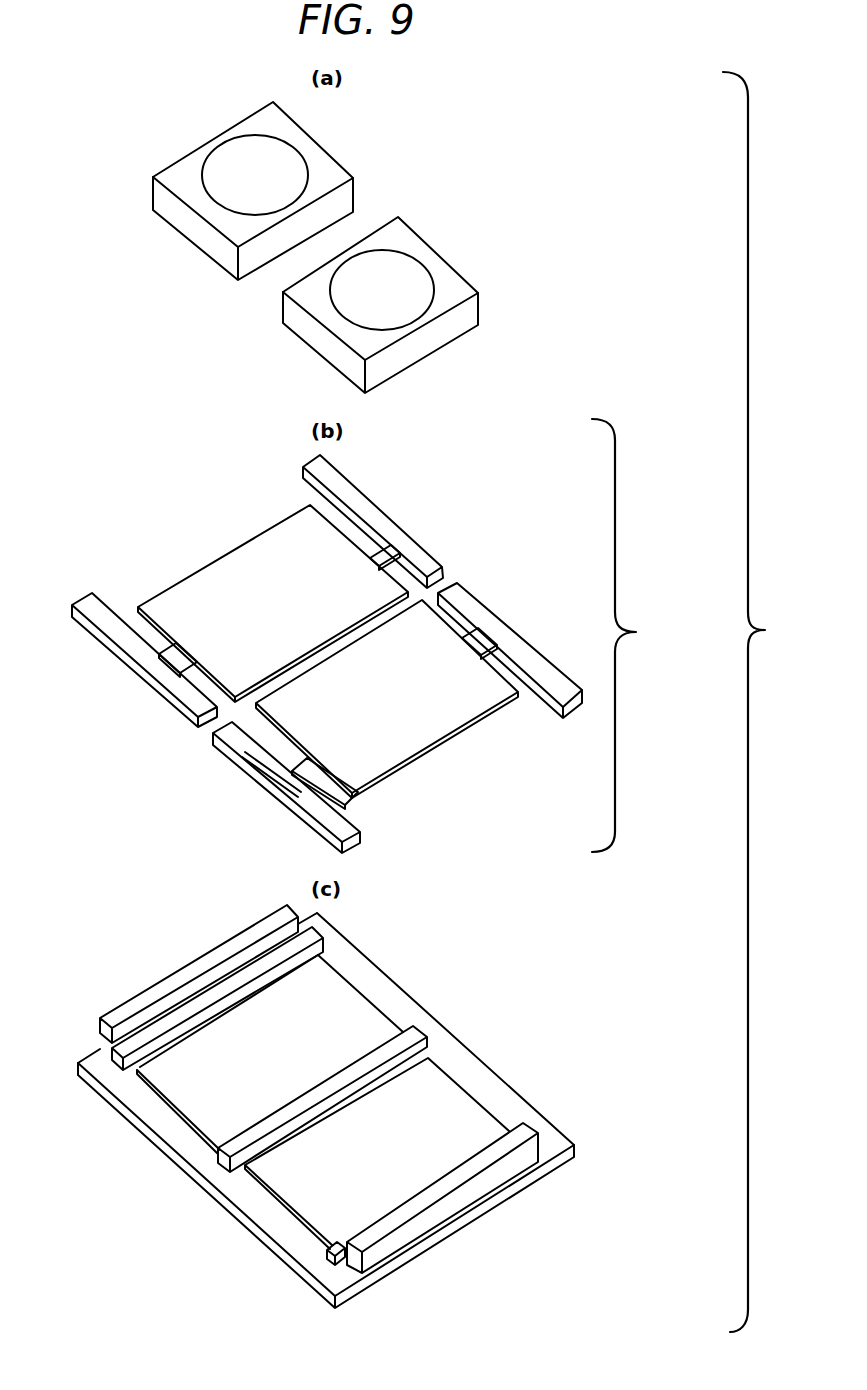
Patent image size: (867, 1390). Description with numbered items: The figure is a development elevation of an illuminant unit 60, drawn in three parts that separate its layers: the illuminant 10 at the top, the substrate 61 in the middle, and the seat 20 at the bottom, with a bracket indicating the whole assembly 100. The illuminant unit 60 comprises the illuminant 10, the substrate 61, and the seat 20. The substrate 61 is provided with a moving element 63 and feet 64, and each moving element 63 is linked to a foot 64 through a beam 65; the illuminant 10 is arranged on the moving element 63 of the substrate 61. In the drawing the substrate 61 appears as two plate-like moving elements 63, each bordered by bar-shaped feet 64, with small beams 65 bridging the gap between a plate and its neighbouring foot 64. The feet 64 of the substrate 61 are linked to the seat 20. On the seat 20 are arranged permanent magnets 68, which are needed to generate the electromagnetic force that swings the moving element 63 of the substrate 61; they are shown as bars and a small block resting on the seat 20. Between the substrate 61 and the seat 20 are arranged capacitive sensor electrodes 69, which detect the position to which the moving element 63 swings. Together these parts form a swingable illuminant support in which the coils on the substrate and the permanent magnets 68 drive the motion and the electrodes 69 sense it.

The illuminant 10 is at (358, 296).
The piezoelectric device 100 is at (631, 73).
The seat 20 is at (510, 1103).
The illuminant unit 60 is at (761, 702).
The substrate 61 is at (629, 635).
The moving element 63 is at (412, 733).
The foot 64 is at (520, 648).
The beam 65 is at (480, 640).
The permanent magnet 68 is at (333, 1237).
The capacitive sensor electrode 69 is at (425, 1095).